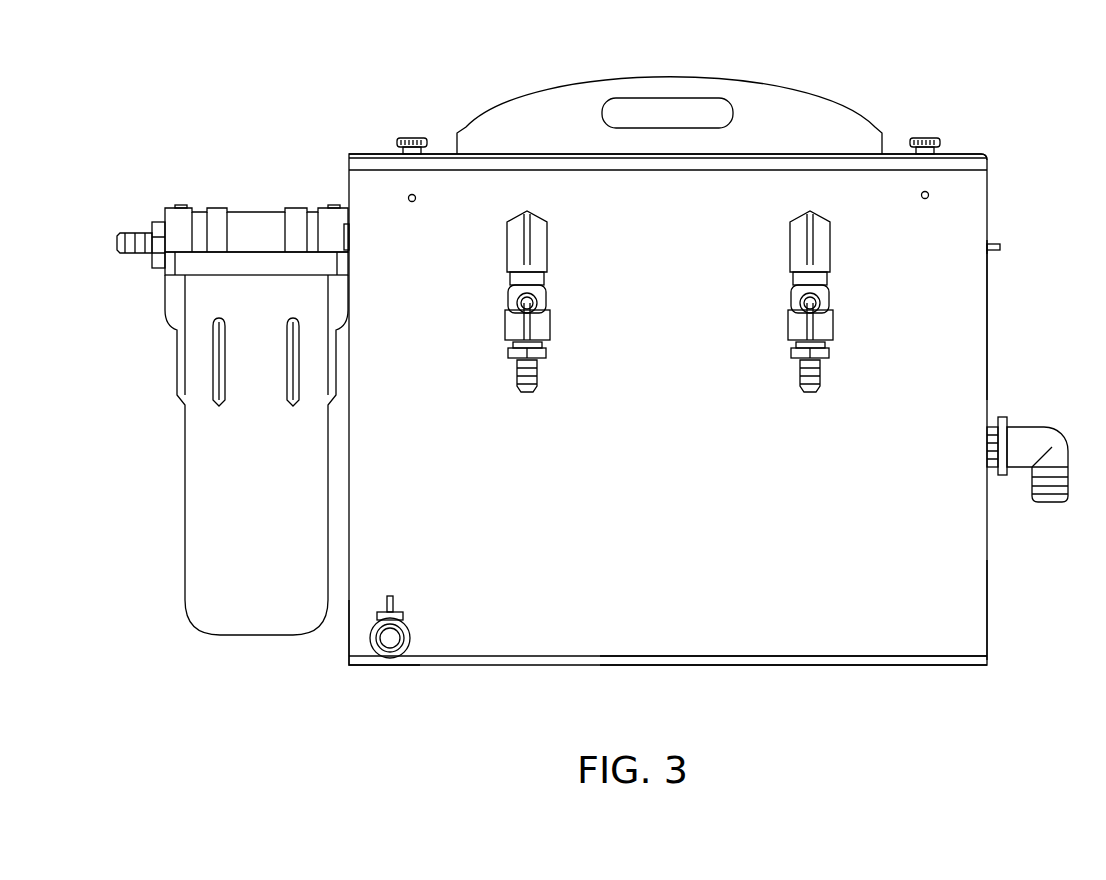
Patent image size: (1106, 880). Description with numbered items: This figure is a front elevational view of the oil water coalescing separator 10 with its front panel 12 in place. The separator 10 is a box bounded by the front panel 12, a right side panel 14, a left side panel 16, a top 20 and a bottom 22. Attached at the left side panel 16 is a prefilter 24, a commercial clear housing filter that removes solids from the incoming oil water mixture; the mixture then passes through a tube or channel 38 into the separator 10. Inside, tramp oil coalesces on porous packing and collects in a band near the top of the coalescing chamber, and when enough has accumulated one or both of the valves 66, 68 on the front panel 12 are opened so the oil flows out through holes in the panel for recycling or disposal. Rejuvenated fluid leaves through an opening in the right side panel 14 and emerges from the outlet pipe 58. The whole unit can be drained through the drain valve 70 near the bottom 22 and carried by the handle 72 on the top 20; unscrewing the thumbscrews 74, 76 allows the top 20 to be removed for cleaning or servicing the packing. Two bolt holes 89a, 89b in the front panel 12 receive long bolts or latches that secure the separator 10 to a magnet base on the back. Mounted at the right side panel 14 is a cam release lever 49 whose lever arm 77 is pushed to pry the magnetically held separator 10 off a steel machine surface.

The oil water coalescing separator 10 is at (456, 660).
The front panel 12 is at (988, 610).
The right side panel 14 is at (988, 298).
The left side panel 16 is at (349, 646).
The top 20 is at (963, 160).
The bottom 22 is at (826, 660).
The prefilter 24 is at (232, 420).
The tube or channel 38 is at (351, 244).
The cam release lever 49 is at (998, 244).
The outlet pipe 58 is at (1044, 427).
The valve 66 is at (540, 233).
The valve 68 is at (792, 233).
The drain valve 70 is at (410, 633).
The handle 72 is at (718, 88).
The thumbscrew 74 is at (412, 137).
The thumbscrew 76 is at (925, 137).
The lever arm 77 is at (1000, 250).
The bolt hole 89a is at (417, 200).
The bolt hole 89b is at (920, 196).